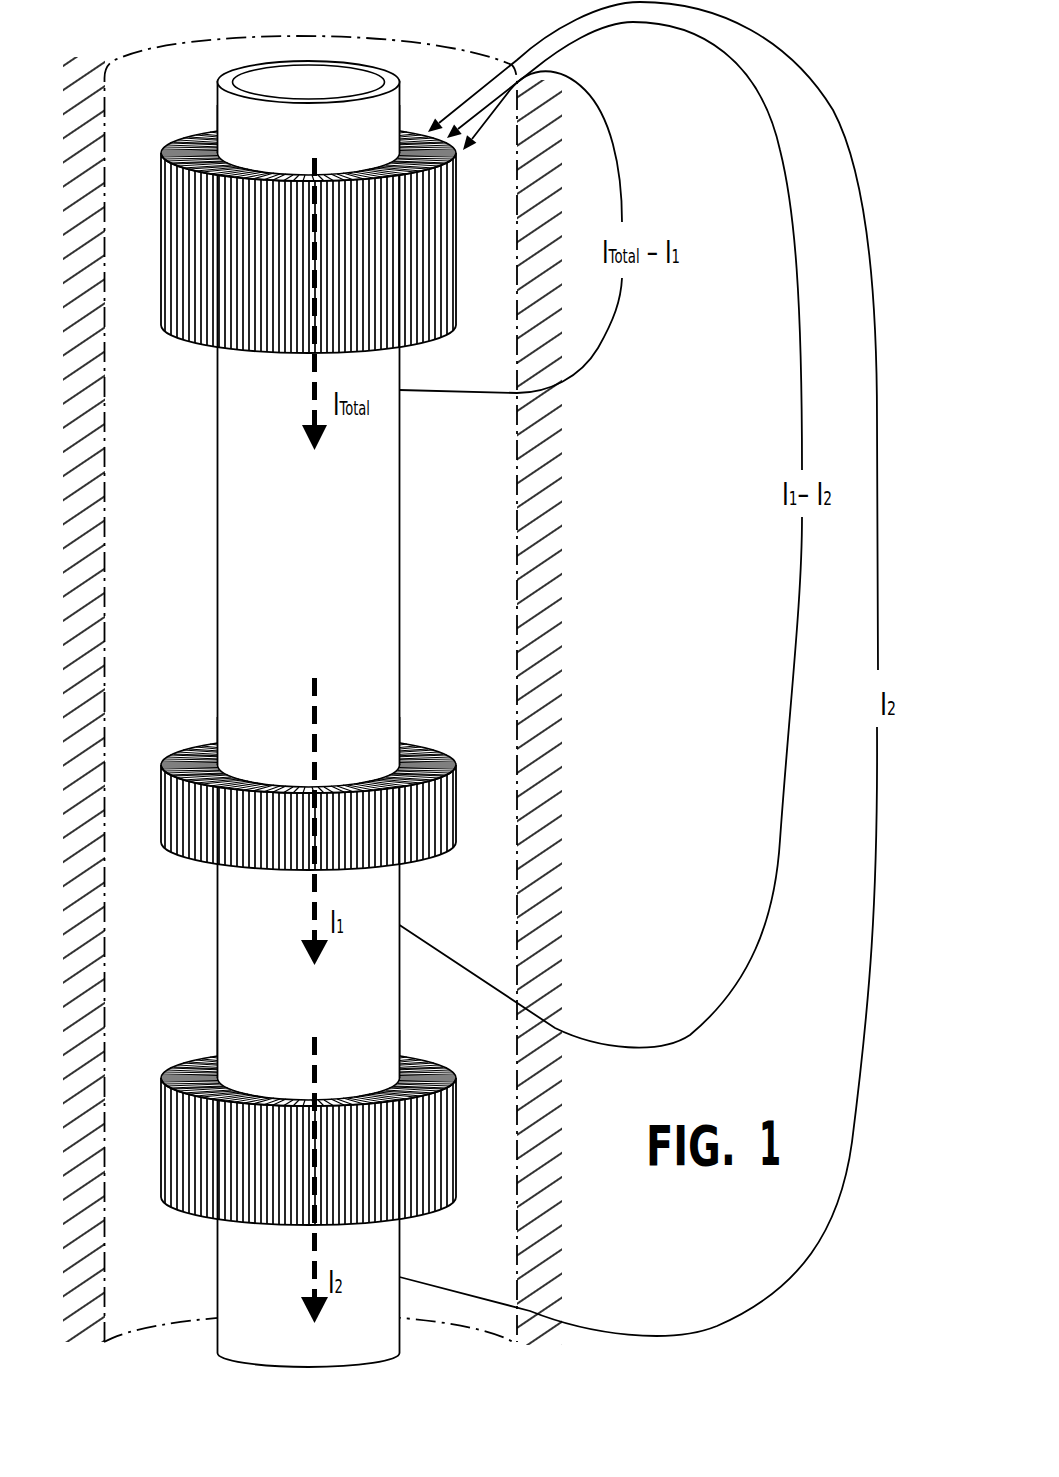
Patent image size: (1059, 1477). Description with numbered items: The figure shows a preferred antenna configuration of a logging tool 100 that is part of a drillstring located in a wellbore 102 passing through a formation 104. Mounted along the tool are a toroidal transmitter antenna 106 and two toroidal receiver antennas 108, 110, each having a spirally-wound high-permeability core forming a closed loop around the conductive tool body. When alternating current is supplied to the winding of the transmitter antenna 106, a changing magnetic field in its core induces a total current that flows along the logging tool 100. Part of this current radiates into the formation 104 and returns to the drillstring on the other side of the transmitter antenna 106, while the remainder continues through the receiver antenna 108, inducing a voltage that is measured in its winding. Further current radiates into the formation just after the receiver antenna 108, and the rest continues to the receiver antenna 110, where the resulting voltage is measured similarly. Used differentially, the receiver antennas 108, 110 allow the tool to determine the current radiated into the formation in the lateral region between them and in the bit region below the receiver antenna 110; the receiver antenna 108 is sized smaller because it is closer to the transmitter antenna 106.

The logging tool 100 is at (400, 482).
The wellbore 102 is at (181, 569).
The formation 104 is at (94, 569).
The transmitter antenna 106 is at (162, 333).
The receiver antenna 108 is at (161, 844).
The receiver antenna 110 is at (160, 1198).